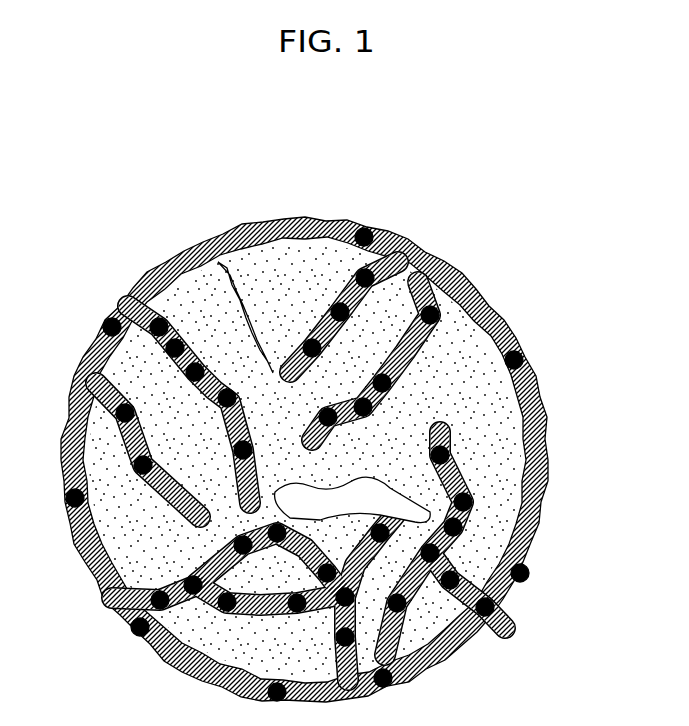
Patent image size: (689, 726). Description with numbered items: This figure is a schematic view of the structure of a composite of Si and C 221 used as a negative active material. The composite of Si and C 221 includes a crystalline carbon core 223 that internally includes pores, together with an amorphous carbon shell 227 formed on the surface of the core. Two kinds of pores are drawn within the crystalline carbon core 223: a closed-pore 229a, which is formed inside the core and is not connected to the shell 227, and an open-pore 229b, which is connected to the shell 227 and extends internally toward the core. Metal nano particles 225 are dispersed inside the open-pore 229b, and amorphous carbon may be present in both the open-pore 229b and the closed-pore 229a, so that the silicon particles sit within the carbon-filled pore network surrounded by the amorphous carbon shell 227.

The composite of Si and C 221 is at (466, 252).
The crystalline carbon core 223 is at (187, 292).
The metal nano particles 225 is at (447, 443).
The amorphous carbon shell 227 is at (100, 596).
The closed-pore 229a is at (257, 288).
The open-pore 229b is at (347, 557).